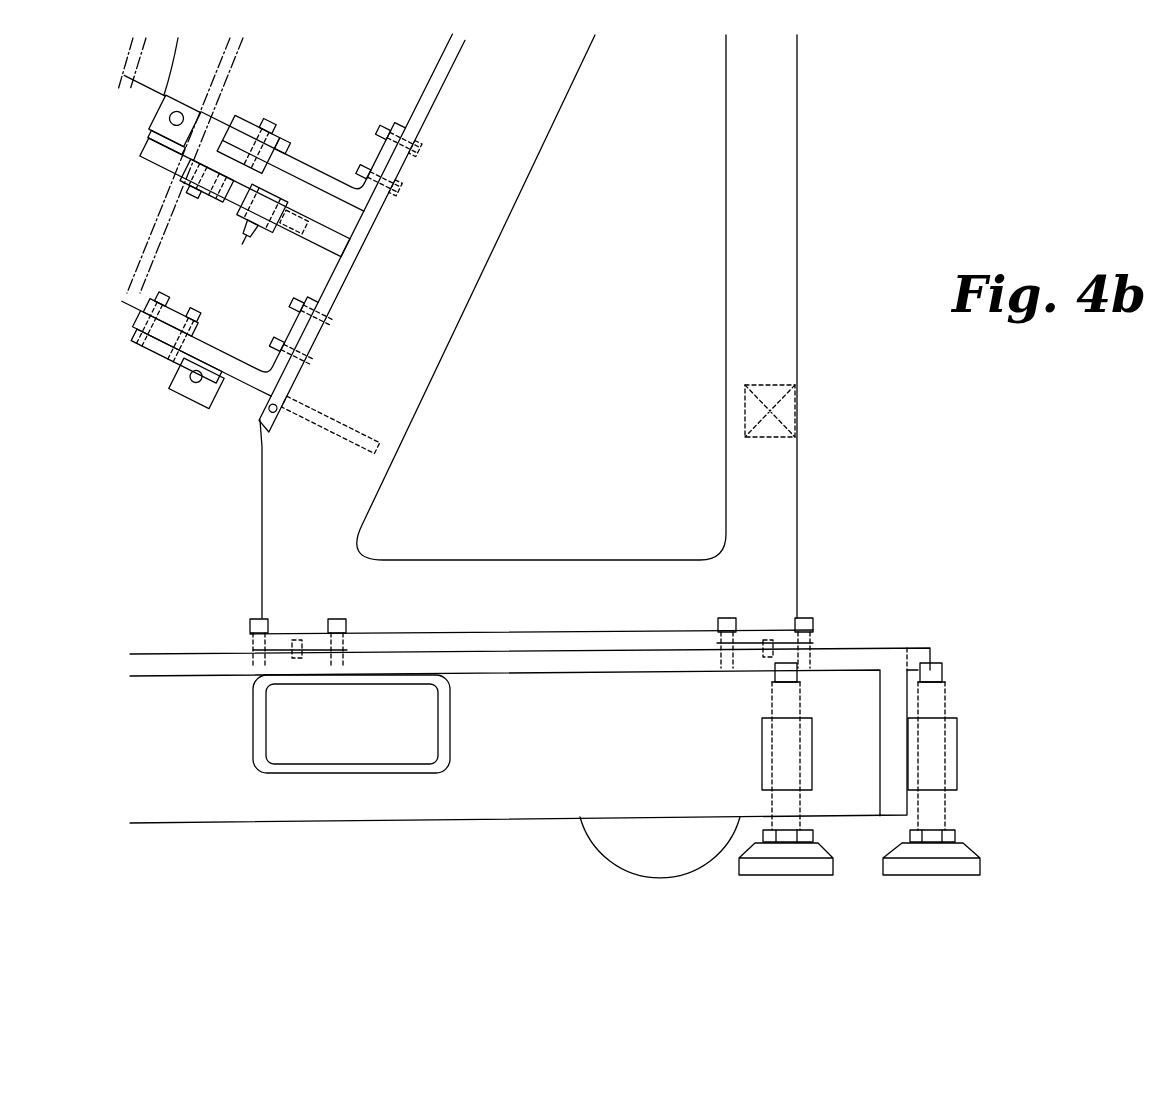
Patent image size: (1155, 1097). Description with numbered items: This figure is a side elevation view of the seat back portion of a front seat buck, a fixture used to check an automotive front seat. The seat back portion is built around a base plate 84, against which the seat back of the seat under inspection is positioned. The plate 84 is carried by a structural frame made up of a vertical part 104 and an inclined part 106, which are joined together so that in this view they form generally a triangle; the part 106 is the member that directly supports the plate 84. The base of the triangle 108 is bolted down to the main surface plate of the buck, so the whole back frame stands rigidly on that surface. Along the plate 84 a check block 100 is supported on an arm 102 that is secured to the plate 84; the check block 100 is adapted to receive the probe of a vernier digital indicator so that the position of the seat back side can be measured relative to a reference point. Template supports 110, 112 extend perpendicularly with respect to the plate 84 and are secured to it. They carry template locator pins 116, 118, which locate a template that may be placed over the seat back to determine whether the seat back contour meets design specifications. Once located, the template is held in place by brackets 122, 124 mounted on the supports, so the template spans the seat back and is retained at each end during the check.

The base plate 84 is at (437, 82).
The check block 100 is at (214, 108).
The arm 102 is at (243, 200).
The vertical part 104 is at (753, 323).
The part 106 is at (478, 318).
The base of the triangle 108 is at (550, 597).
The template support 110 is at (228, 347).
The template support 112 is at (315, 175).
The template locator pin 116 is at (182, 305).
The template locator pin 118 is at (270, 126).
The bracket 122 is at (153, 338).
The bracket 124 is at (222, 145).